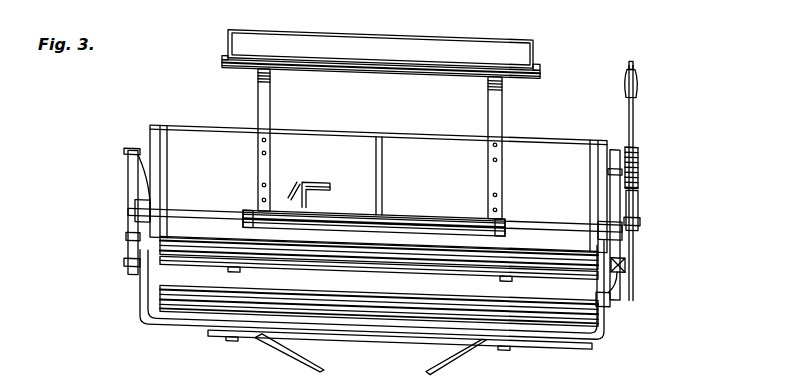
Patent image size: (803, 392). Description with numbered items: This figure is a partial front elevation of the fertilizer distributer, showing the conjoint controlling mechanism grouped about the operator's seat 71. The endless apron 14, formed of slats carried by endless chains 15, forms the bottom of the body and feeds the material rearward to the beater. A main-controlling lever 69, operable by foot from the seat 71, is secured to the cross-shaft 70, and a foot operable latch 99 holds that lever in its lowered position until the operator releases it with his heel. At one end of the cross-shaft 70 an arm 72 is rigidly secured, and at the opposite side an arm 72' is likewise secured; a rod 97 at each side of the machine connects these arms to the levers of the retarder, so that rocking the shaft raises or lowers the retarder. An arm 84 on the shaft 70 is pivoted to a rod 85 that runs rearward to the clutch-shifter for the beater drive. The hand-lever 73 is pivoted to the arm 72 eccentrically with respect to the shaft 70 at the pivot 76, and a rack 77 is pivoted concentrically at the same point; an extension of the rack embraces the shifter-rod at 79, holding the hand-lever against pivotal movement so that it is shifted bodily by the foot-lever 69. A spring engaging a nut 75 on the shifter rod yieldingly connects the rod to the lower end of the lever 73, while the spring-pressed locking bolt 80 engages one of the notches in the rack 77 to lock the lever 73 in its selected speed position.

The seat 71 is at (390, 35).
The endless chains 15 is at (250, 253).
The endless apron 14 is at (384, 270).
The cross-shaft 70 is at (205, 205).
The main-controlling lever 69 is at (313, 181).
The foot operable latch 99 is at (318, 191).
The arm 72' is at (117, 212).
The arm 72 is at (587, 224).
The rod 97 is at (125, 148).
The arm 84 is at (128, 233).
The rod 85 is at (128, 258).
The lever 73 is at (635, 99).
The locking bolt 80 is at (640, 154).
The rack 77 is at (640, 183).
The pivot 76 is at (640, 197).
The embracing portion 79 is at (625, 246).
The nut 75 is at (617, 254).